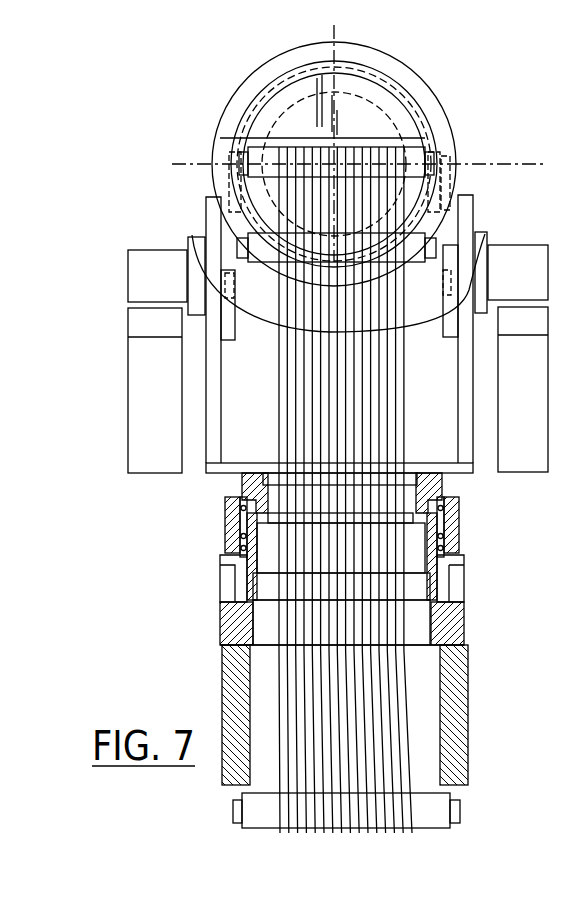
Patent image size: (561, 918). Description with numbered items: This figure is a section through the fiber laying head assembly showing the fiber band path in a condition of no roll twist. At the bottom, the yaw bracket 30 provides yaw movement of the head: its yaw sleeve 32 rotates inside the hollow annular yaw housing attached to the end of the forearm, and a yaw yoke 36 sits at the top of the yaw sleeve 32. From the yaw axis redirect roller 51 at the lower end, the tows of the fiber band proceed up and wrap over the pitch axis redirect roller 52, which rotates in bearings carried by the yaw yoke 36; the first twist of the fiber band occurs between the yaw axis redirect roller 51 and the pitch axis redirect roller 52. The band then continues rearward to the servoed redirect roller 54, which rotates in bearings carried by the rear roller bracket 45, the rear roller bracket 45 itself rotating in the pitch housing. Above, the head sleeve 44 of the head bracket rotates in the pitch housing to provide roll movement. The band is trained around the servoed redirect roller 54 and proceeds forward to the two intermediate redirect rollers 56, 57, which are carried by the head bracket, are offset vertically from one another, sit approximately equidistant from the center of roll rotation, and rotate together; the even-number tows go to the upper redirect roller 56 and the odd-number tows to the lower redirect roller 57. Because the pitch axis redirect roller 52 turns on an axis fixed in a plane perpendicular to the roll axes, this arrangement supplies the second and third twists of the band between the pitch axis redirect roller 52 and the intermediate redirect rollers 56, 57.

The head sleeve 44 is at (412, 83).
The intermediate redirect roller 56 is at (420, 148).
The rear roller bracket 45 is at (220, 137).
The servoed redirect roller 54 is at (457, 162).
The intermediate redirect roller 57 is at (420, 245).
The pitch axis redirect roller 52 is at (428, 292).
The yaw yoke 36 is at (523, 389).
The yaw bracket 30 is at (240, 483).
The yaw sleeve 32 is at (442, 482).
The yaw axis redirect roller 51 is at (445, 812).